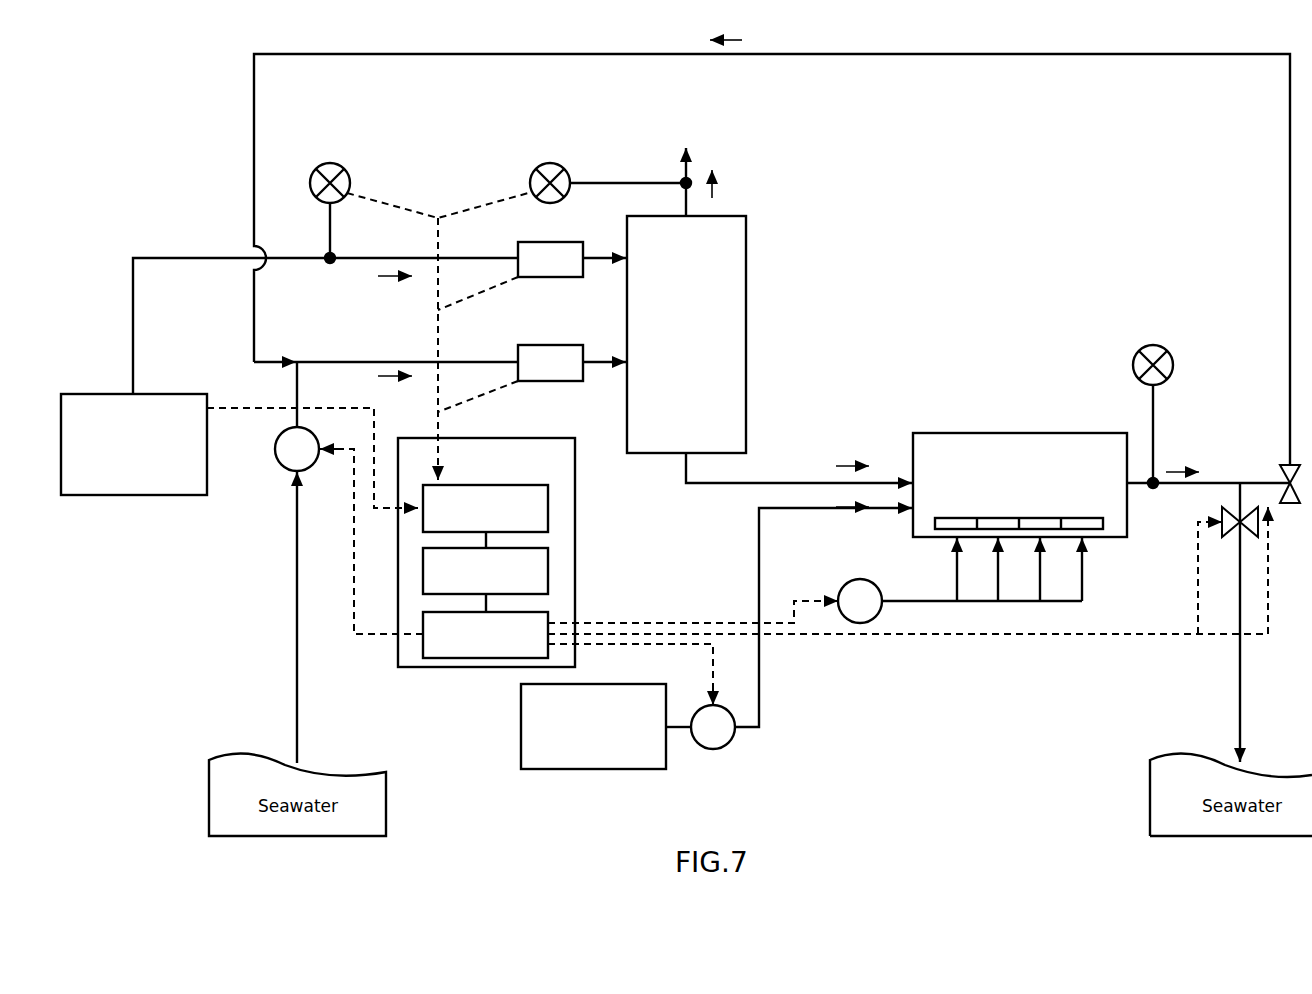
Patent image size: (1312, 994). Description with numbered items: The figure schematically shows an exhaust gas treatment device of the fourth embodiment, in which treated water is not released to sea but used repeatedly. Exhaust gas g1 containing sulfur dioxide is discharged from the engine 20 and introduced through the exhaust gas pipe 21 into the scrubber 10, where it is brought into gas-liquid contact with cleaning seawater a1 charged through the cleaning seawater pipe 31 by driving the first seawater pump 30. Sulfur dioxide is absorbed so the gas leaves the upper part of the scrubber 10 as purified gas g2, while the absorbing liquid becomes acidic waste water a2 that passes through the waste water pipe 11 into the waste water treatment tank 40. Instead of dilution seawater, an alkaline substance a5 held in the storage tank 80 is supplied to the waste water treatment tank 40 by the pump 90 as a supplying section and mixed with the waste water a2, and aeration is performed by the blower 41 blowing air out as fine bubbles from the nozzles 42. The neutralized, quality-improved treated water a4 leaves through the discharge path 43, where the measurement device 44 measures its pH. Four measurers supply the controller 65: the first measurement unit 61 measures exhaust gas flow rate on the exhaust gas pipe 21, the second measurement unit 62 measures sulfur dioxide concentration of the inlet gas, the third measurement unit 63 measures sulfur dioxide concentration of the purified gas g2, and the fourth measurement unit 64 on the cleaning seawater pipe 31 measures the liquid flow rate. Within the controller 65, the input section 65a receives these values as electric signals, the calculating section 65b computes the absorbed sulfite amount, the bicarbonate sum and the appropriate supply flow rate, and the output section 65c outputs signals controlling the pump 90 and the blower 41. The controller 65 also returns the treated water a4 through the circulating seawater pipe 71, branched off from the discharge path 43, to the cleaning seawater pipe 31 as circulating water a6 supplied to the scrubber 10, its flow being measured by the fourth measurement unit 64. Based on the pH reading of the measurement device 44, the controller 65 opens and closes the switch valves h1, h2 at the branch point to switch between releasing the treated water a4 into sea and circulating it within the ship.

The scrubber 10 is at (748, 246).
The waste water pipe 11 is at (776, 483).
The engine 20 is at (90, 393).
The exhaust gas pipe 21 is at (173, 258).
The first seawater pump 30 is at (315, 436).
The cleaning seawater pipe 31 is at (312, 362).
The waste water treatment tank 40 is at (1040, 433).
The blower 41 is at (860, 623).
The nozzles 42 is at (1103, 524).
The discharge path 43 is at (1207, 483).
The measurement device 44 is at (1167, 350).
The first measurement unit 61 is at (555, 242).
The second measurement unit 62 is at (344, 168).
The third measurement unit 63 is at (564, 168).
The fourth measurement unit 64 is at (555, 345).
The controller 65 is at (534, 438).
The input section 65a is at (548, 508).
The calculating section 65b is at (548, 572).
The output section 65c is at (548, 655).
The circulating seawater pipe 71 is at (1177, 54).
The storage tank 80 is at (635, 769).
The pump 90 is at (712, 749).
The switch valve h1 is at (1250, 538).
The switch valve h2 is at (1285, 460).
The cleaning seawater a1 is at (388, 382).
The waste water a2 is at (845, 462).
The treated water a4 is at (1176, 467).
The alkaline substance a5 is at (845, 513).
The circulating water a6 is at (727, 36).
The exhaust gas g1 is at (388, 282).
The purified gas g2 is at (714, 186).